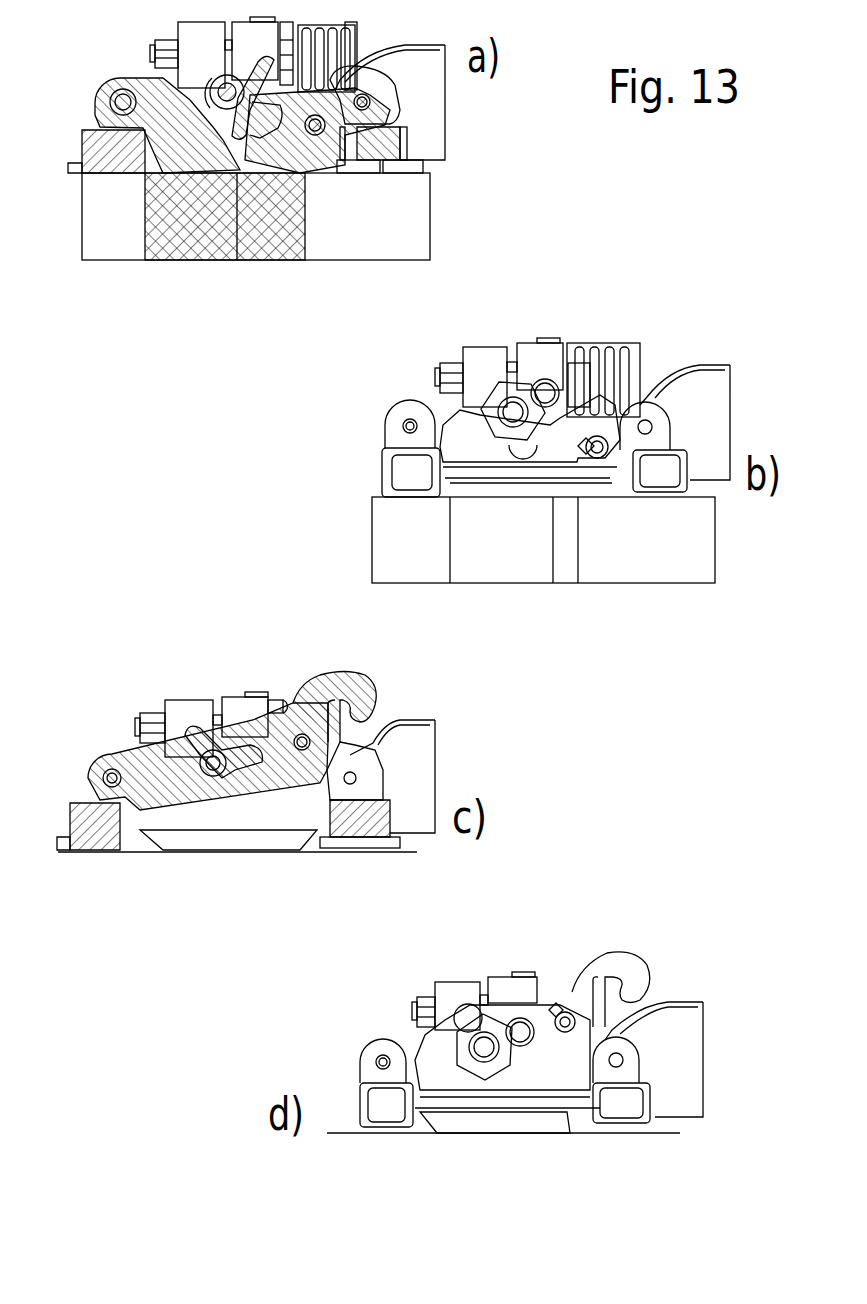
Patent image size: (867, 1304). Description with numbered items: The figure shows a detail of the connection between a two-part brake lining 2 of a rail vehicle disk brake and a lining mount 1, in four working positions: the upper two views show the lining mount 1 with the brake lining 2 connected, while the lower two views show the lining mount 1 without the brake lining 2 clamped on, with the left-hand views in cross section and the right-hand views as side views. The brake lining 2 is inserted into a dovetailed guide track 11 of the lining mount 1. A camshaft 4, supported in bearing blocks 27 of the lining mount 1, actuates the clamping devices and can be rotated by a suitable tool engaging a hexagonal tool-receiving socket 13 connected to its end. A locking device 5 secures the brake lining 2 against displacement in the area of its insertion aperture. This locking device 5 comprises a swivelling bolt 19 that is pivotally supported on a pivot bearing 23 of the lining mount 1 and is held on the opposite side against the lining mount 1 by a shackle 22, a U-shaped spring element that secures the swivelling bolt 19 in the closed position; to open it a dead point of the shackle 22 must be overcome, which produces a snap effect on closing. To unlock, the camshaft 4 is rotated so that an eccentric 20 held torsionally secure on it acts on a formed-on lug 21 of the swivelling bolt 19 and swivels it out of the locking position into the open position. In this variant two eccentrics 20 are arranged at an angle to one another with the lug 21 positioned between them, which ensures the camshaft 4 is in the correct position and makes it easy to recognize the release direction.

The lining mount 1 is at (432, 135).
The brake lining 2 is at (372, 240).
The camshaft 4 is at (252, 64).
The locking device 5 is at (130, 66).
The guide track 11 is at (220, 837).
The tool-receiving socket 13 is at (493, 410).
The swivelling bolt 19 is at (178, 122).
The eccentric 20 is at (240, 100).
The lug 21 is at (267, 92).
The shackle 22 is at (630, 435).
The pivot bearing 23 is at (123, 102).
The bearing block 27 is at (205, 42).